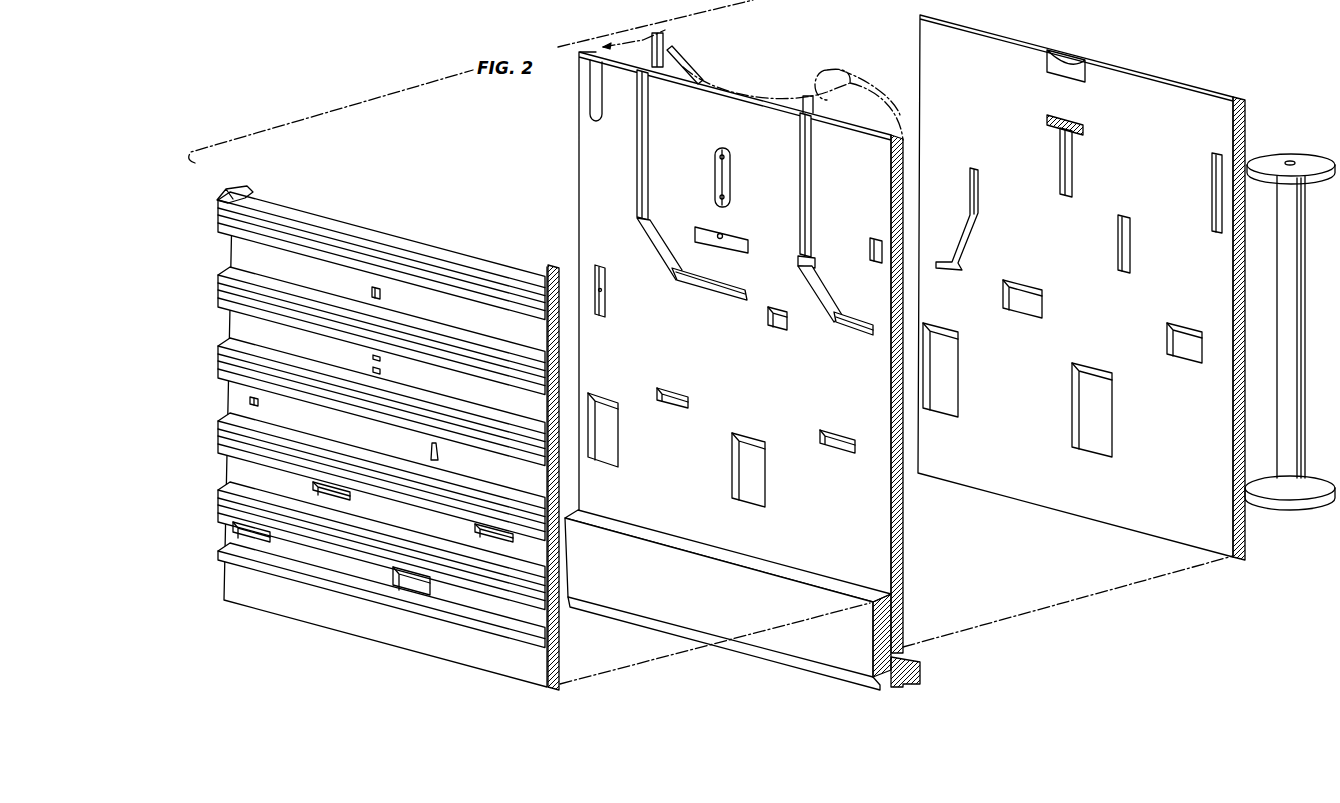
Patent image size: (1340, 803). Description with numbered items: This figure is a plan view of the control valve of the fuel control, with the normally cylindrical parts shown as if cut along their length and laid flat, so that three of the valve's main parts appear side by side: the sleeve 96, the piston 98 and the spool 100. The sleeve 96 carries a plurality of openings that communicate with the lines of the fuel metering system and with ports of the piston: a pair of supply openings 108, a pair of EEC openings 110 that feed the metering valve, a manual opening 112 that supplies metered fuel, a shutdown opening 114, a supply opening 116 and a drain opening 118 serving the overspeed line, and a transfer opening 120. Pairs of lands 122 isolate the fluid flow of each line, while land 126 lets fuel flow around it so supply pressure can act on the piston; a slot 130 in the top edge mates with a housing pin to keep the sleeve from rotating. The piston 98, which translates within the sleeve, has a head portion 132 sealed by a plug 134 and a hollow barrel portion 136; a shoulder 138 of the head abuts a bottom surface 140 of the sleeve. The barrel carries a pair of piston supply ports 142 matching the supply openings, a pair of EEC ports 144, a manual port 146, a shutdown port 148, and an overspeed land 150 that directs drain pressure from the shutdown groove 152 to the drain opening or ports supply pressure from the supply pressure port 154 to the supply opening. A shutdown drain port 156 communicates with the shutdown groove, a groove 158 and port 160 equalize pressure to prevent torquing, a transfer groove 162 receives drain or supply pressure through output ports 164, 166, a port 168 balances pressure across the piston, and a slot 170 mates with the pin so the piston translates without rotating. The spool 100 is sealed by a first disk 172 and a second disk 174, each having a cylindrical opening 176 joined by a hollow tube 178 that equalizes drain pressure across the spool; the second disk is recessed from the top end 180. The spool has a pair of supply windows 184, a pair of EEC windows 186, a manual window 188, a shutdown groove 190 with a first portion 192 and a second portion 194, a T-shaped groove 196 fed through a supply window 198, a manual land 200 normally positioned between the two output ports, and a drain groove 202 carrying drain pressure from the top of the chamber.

The sleeve 96 is at (367, 427).
The piston 98 is at (888, 378).
The spool 100 is at (1081, 287).
The supply openings 108 is at (266, 540).
The EEC openings 110 is at (312, 486).
The manual opening 112 is at (431, 450).
The shutdown opening 114 is at (259, 401).
The supply opening 116 is at (372, 358).
The drain opening 118 is at (382, 370).
The transfer opening 120 is at (370, 292).
The lands 122 is at (217, 222).
The land 126 is at (217, 556).
The slot 130 is at (243, 188).
The head portion 132 is at (728, 600).
The plug 134 is at (910, 680).
The hollow barrel portion 136 is at (726, 347).
The shoulder 138 is at (683, 551).
The bottom surface 140 is at (896, 630).
The piston supply ports 142 is at (612, 446).
The EEC ports 144 is at (674, 401).
The manual port 146 is at (780, 331).
The shutdown port 148 is at (606, 300).
The overspeed land 150 is at (710, 263).
The shutdown groove 152 is at (646, 175).
The supply pressure port 154 is at (738, 267).
The shutdown drain port 156 is at (637, 225).
The groove 158 is at (816, 215).
The port 160 is at (798, 266).
The transfer groove 162 is at (726, 184).
The output port 164 is at (718, 160).
The output port 166 is at (738, 186).
The port 168 is at (869, 256).
The slot 170 is at (583, 114).
The first disk 172 is at (1302, 481).
The second disk 174 is at (1292, 156).
The cylindrical opening 176 is at (1303, 140).
The hollow tube 178 is at (1292, 319).
The top end 180 is at (1135, 69).
The supply windows 184 is at (952, 386).
The EEC windows 186 is at (1025, 311).
The manual window 188 is at (1117, 263).
The shutdown groove 190 is at (973, 236).
The first portion 192 is at (945, 271).
The second portion 194 is at (978, 181).
The T-shaped groove 196 is at (1075, 169).
The supply window 198 is at (1063, 198).
The manual land 200 is at (1078, 67).
The drain groove 202 is at (1066, 62).